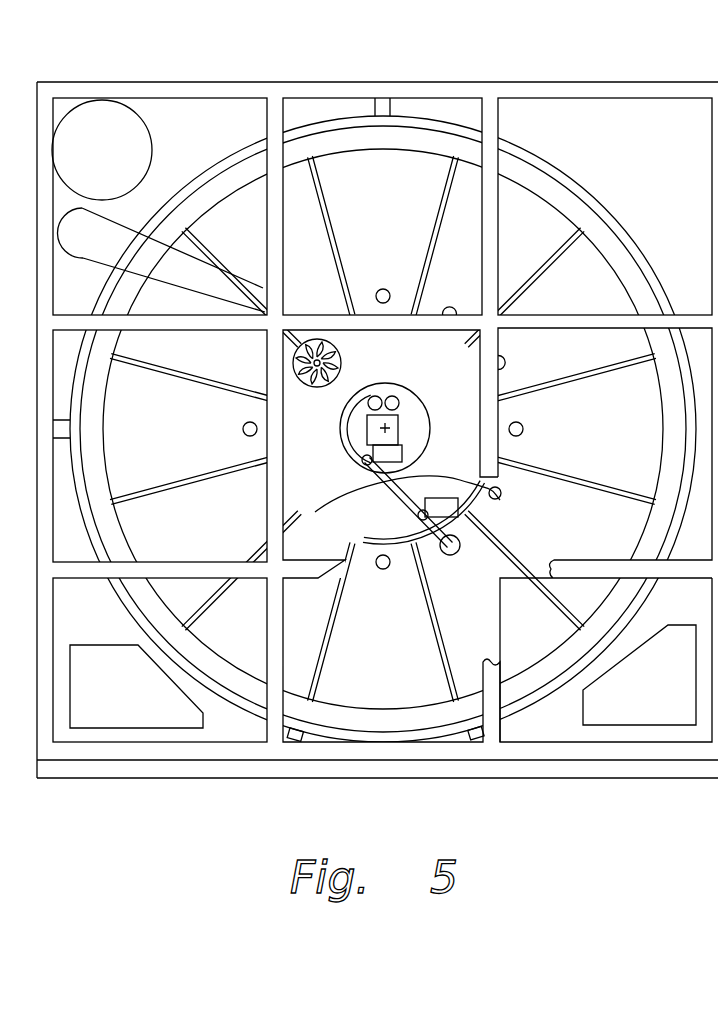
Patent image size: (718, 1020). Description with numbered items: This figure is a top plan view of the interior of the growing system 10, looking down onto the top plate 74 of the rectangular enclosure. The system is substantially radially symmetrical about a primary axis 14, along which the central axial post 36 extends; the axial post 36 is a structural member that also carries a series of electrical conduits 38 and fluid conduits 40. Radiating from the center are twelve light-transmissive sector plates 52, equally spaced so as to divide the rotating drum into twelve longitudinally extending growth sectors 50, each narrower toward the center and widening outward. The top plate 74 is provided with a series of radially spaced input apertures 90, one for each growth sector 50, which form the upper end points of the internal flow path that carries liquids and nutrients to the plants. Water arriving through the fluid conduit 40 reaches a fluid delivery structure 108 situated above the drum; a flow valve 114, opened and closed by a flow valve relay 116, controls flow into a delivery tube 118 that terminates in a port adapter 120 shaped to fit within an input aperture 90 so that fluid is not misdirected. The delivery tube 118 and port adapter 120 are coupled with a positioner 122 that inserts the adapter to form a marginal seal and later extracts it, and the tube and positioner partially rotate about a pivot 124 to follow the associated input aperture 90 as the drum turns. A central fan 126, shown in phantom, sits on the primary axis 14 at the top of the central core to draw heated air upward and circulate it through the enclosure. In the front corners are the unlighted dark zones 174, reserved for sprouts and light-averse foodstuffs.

The growing system 10 is at (405, 62).
The primary axis 14 is at (382, 426).
The central axial post 36 is at (398, 428).
The electrical conduits 38 is at (399, 403).
The fluid conduits 40 is at (388, 360).
The growth sectors 50 is at (402, 650).
The sector plates 52 is at (550, 467).
The top plate 74 is at (525, 228).
The input apertures 90 is at (243, 426).
The fluid delivery structure 108 is at (350, 428).
The flow valve 114 is at (364, 464).
The flow valve relay 116 is at (400, 452).
The delivery tube 118 is at (508, 492).
The port adapter 120 is at (458, 548).
The positioner 122 is at (460, 513).
The pivot 124 is at (420, 512).
The central fan 126 is at (323, 342).
The dark zones 174 is at (113, 710).